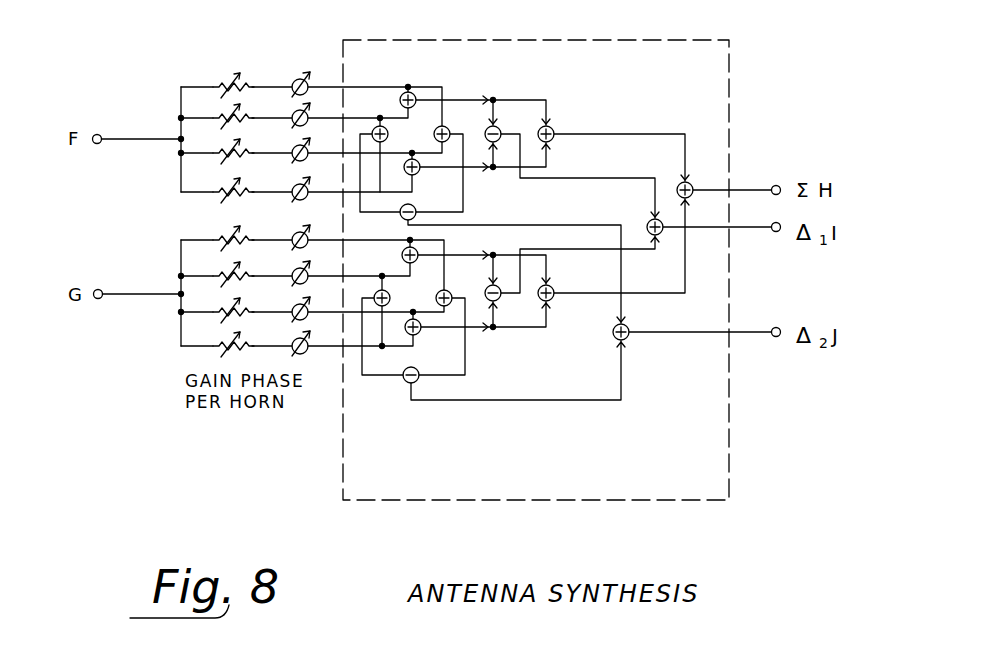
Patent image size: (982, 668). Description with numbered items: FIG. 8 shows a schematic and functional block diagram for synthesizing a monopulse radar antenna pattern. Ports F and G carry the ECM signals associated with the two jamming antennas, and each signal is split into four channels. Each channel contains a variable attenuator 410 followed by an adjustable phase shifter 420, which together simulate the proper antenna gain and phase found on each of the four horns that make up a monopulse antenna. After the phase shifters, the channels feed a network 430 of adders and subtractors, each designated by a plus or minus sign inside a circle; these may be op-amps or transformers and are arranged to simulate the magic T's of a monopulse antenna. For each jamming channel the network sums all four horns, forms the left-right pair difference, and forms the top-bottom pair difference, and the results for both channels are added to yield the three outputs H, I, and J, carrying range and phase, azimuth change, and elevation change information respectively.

The variable attenuator 410 is at (226, 84).
The adjustable phase shifter 420 is at (294, 84).
The network of adders and subtractors 430 is at (428, 40).